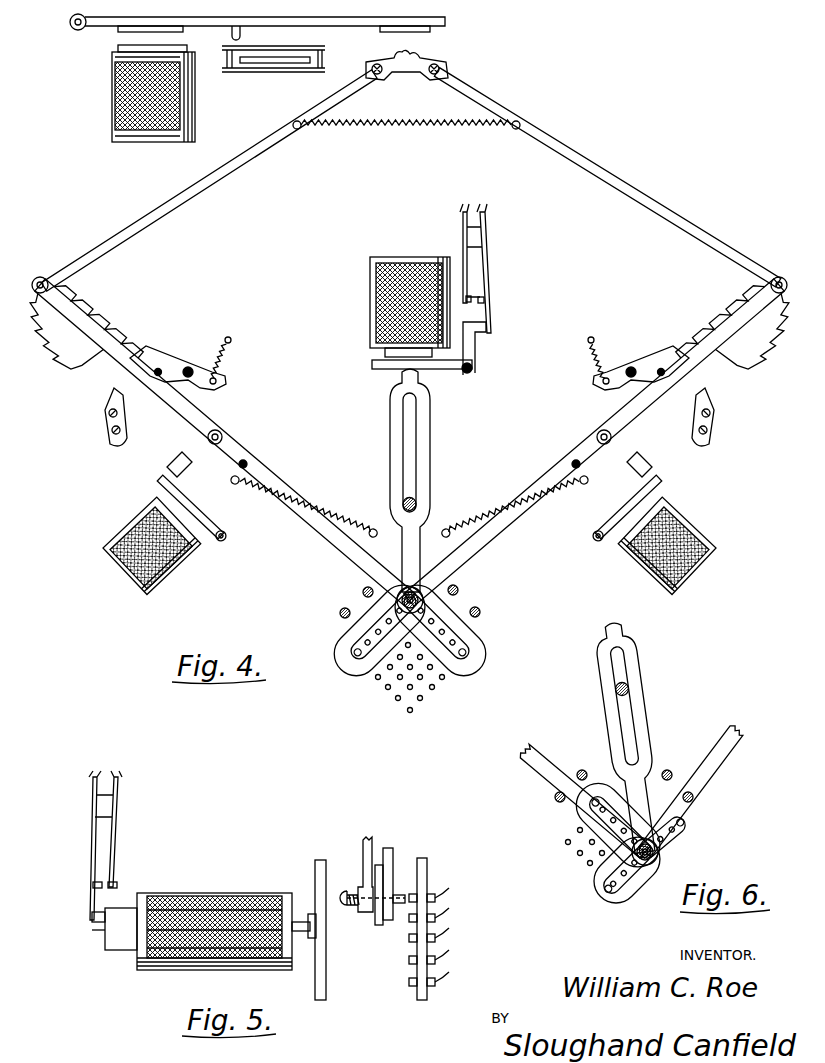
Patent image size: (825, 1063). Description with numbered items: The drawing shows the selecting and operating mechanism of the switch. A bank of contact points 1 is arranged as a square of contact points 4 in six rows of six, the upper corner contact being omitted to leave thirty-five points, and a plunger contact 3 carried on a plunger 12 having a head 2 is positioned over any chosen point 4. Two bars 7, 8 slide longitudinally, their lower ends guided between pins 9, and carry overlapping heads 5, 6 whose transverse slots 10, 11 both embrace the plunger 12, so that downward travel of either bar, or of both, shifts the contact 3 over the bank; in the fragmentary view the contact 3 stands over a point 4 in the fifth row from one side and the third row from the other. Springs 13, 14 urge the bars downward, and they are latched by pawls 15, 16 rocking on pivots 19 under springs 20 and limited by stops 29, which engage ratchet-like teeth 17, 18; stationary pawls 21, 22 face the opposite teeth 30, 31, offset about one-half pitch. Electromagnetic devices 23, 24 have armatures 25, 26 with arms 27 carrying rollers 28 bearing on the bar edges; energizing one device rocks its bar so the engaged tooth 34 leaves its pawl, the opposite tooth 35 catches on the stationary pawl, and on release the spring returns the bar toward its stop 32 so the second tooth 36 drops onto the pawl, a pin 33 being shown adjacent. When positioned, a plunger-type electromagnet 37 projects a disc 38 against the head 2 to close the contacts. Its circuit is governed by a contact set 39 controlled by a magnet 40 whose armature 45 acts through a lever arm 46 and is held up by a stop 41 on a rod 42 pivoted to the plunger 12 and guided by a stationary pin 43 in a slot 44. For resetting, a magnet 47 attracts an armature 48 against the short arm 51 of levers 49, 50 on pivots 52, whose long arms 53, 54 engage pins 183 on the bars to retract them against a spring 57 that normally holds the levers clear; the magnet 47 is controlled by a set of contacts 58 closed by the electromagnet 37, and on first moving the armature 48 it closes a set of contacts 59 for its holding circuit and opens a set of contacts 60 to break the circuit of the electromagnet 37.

In FIG. 4, the bank of contact points 1 is at (407, 678).
In FIG. 6, the bank of contact points 1 is at (585, 847).
In FIG. 4, the head 2 is at (404, 586).
In FIG. 5, the head 2 is at (351, 903).
In FIG. 6, the head 2 is at (645, 852).
In FIG. 5, the plunger contact 3 is at (396, 894).
In FIG. 4, the contact points 4 is at (434, 699).
In FIG. 5, the contact points 4 is at (409, 962).
In FIG. 4, the head 5 is at (444, 630).
In FIG. 6, the head 5 is at (618, 825).
In FIG. 4, the head 6 is at (372, 630).
In FIG. 6, the head 6 is at (637, 863).
In FIG. 4, the bar 7 is at (605, 442).
In FIG. 6, the bar 7 is at (710, 778).
In FIG. 4, the bar 8 is at (213, 442).
In FIG. 6, the bar 8 is at (542, 787).
In FIG. 4, the pins 9 is at (481, 612).
In FIG. 6, the pins 9 is at (624, 786).
In FIG. 4, the slot 10 is at (462, 646).
In FIG. 6, the slot 10 is at (620, 827).
In FIG. 4, the slot 11 is at (358, 650).
In FIG. 6, the slot 11 is at (627, 870).
In FIG. 4, the plunger 12 is at (402, 591).
In FIG. 5, the plunger 12 is at (360, 913).
In FIG. 4, the spring 13 is at (517, 493).
In FIG. 4, the spring 14 is at (312, 504).
In FIG. 4, the pawl 15 is at (656, 352).
In FIG. 4, the pawl 16 is at (166, 352).
In FIG. 4, the teeth 17 is at (728, 316).
In FIG. 4, the teeth 18 is at (102, 312).
In FIG. 4, the pivots 19 is at (630, 367).
In FIG. 4, the springs 20 is at (592, 370).
In FIG. 4, the stationary pawl 21 is at (714, 407).
In FIG. 4, the stationary pawl 22 is at (106, 407).
In FIG. 4, the electromagnetic device 23 is at (640, 568).
In FIG. 4, the electromagnetic device 24 is at (184, 568).
In FIG. 4, the armature 25 is at (656, 488).
In FIG. 4, the armature 26 is at (164, 484).
In FIG. 4, the arms 27 is at (635, 460).
In FIG. 4, the rollers 28 is at (599, 431).
In FIG. 4, the stops 29 is at (658, 378).
In FIG. 4, the teeth 30 is at (744, 346).
In FIG. 4, the teeth 31 is at (80, 352).
In FIG. 4, the stop 32 is at (574, 461).
In FIG. 4, the pin 33 is at (247, 464).
In FIG. 4, the tooth 34 is at (686, 360).
In FIG. 4, the tooth 35 is at (710, 381).
In FIG. 4, the second tooth 36 is at (698, 348).
In FIG. 5, the electromagnet 37 is at (226, 892).
In FIG. 5, the disc 38 is at (322, 860).
In FIG. 4, the contact set 39 is at (488, 297).
In FIG. 4, the magnet 40 is at (370, 282).
In FIG. 4, the stop 41 is at (400, 378).
In FIG. 4, the rod 42 is at (408, 480).
In FIG. 5, the rod 42 is at (364, 842).
In FIG. 6, the rod 42 is at (637, 737).
In FIG. 4, the stationary pin 43 is at (417, 501).
In FIG. 6, the stationary pin 43 is at (630, 689).
In FIG. 4, the slot 44 is at (408, 445).
In FIG. 4, the armature 45 is at (438, 370).
In FIG. 4, the lever arm 46 is at (478, 352).
In FIG. 4, the magnet 47 is at (196, 118).
In FIG. 4, the armature 48 is at (445, 22).
In FIG. 4, the lever 49 is at (607, 177).
In FIG. 4, the lever 50 is at (209, 180).
In FIG. 4, the short arm 51 is at (409, 72).
In FIG. 4, the pivots 52 is at (450, 51).
In FIG. 4, the long arm 53 is at (670, 244).
In FIG. 4, the long arm 54 is at (198, 201).
In FIG. 4, the spring 57 is at (416, 132).
In FIG. 5, the set of contacts 58 is at (111, 882).
In FIG. 4, the set of contacts 59 is at (265, 71).
In FIG. 4, the set of contacts 60 is at (258, 63).
In FIG. 4, the pins 183 is at (775, 279).